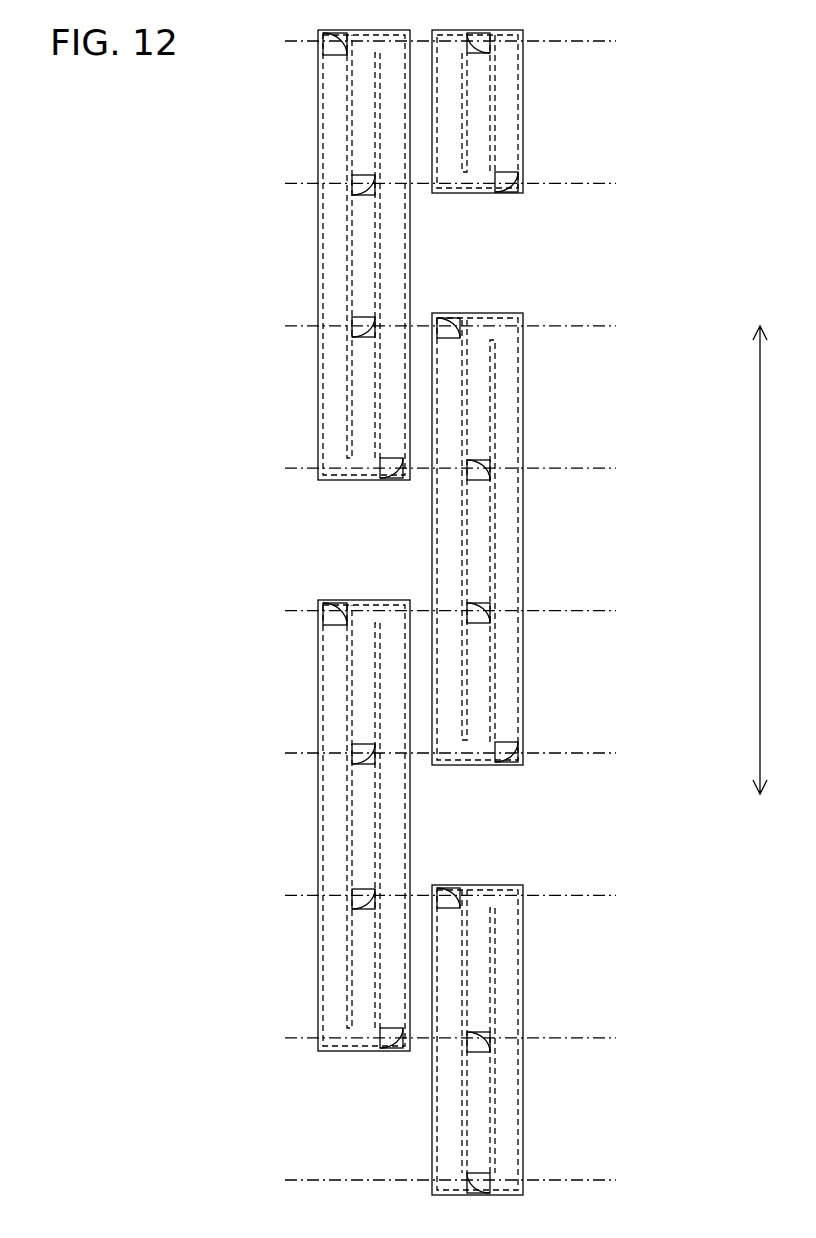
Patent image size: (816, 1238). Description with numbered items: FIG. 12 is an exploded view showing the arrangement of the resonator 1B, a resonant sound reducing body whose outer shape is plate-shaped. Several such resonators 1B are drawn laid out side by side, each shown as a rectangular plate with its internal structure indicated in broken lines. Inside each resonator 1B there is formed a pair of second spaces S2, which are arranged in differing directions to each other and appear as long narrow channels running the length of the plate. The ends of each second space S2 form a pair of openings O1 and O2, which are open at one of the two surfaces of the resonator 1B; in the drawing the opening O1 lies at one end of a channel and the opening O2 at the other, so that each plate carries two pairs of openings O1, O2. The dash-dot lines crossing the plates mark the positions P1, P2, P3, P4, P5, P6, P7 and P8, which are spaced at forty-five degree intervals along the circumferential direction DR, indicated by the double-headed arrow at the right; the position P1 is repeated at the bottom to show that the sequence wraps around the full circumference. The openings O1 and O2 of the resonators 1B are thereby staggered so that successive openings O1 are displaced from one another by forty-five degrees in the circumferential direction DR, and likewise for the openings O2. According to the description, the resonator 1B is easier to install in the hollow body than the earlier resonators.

The resonator 1B is at (318, 160).
The second space S2 is at (402, 165).
The opening O1 is at (335, 40).
The opening O2 is at (484, 40).
The position P1 is at (632, 48).
The position P2 is at (632, 190).
The position P3 is at (632, 333).
The position P4 is at (632, 475).
The position P5 is at (632, 618).
The position P6 is at (632, 760).
The position P7 is at (632, 902).
The position P8 is at (632, 1045).
The circumferential direction DR is at (775, 560).